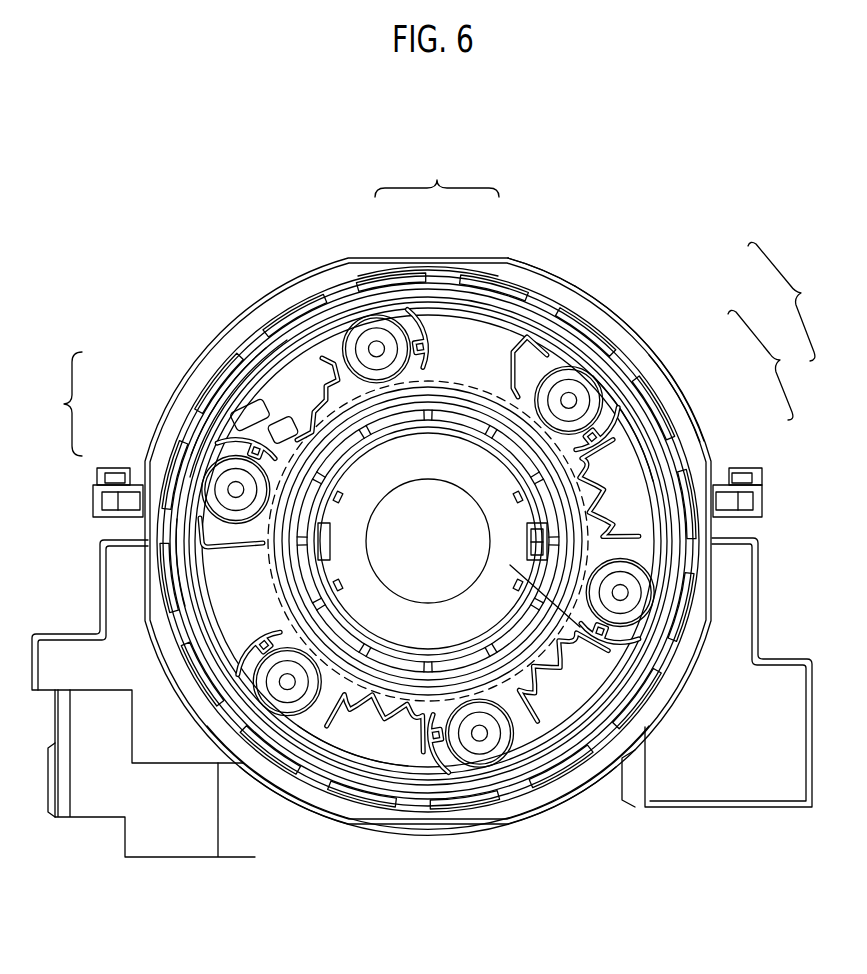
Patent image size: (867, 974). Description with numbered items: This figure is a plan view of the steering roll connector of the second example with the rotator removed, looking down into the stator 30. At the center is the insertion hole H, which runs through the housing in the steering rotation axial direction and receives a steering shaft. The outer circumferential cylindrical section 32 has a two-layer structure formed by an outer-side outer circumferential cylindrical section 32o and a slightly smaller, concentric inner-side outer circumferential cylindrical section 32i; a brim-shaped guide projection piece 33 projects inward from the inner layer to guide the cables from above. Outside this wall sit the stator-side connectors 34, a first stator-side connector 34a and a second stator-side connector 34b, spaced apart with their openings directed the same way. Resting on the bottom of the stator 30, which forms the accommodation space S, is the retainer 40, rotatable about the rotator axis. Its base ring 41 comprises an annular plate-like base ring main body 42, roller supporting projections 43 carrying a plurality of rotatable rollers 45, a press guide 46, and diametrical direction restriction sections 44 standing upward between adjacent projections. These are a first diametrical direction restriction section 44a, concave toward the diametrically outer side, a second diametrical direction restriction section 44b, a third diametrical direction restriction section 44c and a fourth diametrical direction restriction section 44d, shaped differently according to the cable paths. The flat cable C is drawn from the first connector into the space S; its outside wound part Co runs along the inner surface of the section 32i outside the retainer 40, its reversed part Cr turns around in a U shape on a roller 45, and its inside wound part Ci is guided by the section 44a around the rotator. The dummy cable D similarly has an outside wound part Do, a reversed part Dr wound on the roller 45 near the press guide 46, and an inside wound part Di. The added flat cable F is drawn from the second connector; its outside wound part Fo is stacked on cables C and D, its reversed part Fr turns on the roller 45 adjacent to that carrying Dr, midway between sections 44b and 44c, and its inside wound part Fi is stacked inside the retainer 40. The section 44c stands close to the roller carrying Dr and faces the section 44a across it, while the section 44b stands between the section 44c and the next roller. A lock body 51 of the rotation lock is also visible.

The stator 30 is at (296, 269).
The outer circumferential cylindrical section 32 is at (452, 904).
The outer-side outer circumferential cylindrical section 32o is at (400, 818).
The inner-side outer circumferential cylindrical section 32i is at (430, 800).
The guide projection piece 33 is at (303, 327).
The stator-side connectors 34 is at (427, 651).
The first stator-side connector 34a is at (183, 858).
The second stator-side connector 34b is at (702, 808).
The retainer 40 is at (701, 341).
The base ring 41 is at (727, 376).
The base ring main body 42 is at (632, 427).
The roller supporting projections 43 is at (610, 312).
The diametrical direction restriction sections 44 is at (427, 541).
The first diametrical direction restriction section 44a is at (333, 385).
The second diametrical direction restriction section 44b is at (355, 282).
The third diametrical direction restriction section 44c is at (545, 378).
The fourth diametrical direction restriction section 44d is at (605, 465).
The rotatable rollers 45 is at (568, 380).
The press guide 46 is at (250, 400).
The lock body 51 is at (620, 640).
The flat cable C is at (428, 213).
The inside wound part of the flat cable Ci is at (422, 270).
The reversed part of the flat cable Cr is at (483, 290).
The outside wound part of the flat cable Co is at (515, 262).
The dummy cable D is at (169, 408).
The outside wound part of the dummy cable Do is at (225, 392).
The reversed part of the dummy cable Dr is at (178, 400).
The inside wound part of the dummy cable Di is at (205, 445).
The flat cable F is at (210, 614).
The reversed part of flat cable F Fr is at (180, 588).
The inside wound part of flat cable F Fi is at (310, 700).
The outside wound part of flat cable F Fo is at (340, 700).
The insertion hole H is at (420, 546).
The accommodation space S is at (577, 699).